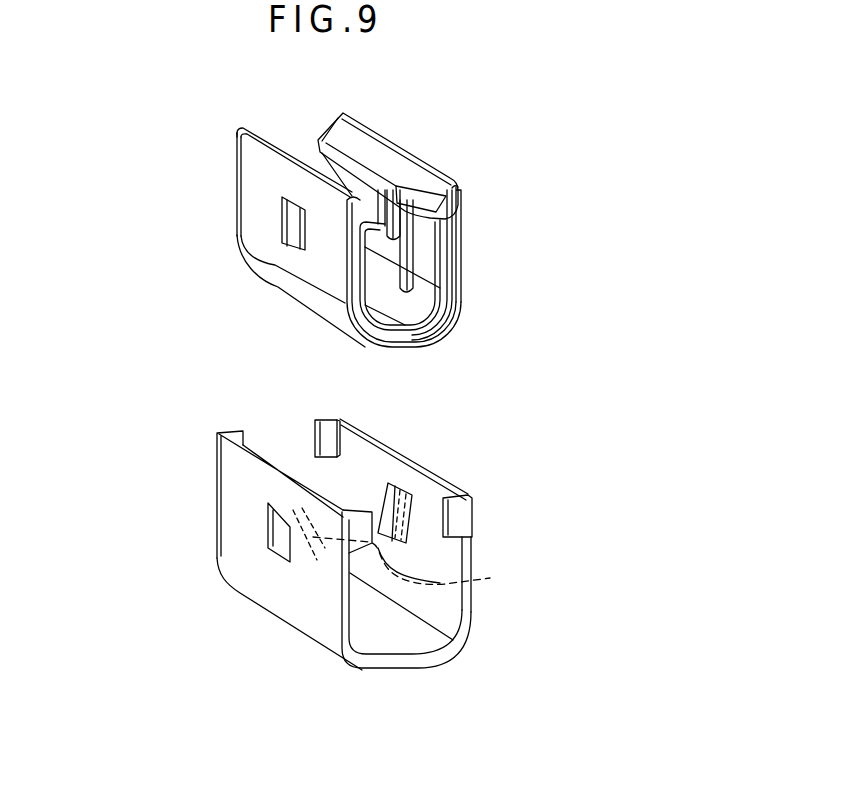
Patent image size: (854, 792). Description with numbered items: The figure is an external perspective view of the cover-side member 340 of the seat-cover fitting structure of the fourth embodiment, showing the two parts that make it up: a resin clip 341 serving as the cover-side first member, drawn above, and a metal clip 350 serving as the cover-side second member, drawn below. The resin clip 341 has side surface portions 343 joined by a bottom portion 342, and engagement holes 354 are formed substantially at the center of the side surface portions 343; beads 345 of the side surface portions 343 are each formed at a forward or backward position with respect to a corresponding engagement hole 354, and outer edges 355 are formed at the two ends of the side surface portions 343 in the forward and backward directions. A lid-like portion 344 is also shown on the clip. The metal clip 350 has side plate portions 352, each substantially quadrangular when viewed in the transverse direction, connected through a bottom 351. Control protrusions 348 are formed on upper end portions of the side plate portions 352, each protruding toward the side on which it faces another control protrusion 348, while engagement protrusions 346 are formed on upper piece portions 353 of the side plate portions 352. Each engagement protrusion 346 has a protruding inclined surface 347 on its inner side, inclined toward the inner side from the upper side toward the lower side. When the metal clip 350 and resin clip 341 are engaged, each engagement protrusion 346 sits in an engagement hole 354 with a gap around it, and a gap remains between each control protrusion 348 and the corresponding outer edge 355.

The cover-side member 340 is at (176, 141).
The resin clip 341 is at (288, 108).
The bottom portion 342 is at (403, 348).
The side surface portions 343 is at (290, 263).
The lid portion 344 is at (390, 160).
The beads 345 is at (408, 243).
The engagement protrusions 346 is at (268, 526).
The protruding inclined surface 347 is at (462, 580).
The control protrusions 348 is at (468, 493).
The metal clip 350 is at (168, 462).
The bottom wall 351 is at (407, 668).
The side plate portions 352 is at (278, 582).
The upper piece portions 353 is at (282, 488).
The engagement holes 354 is at (288, 233).
The outer edges 355 is at (318, 147).